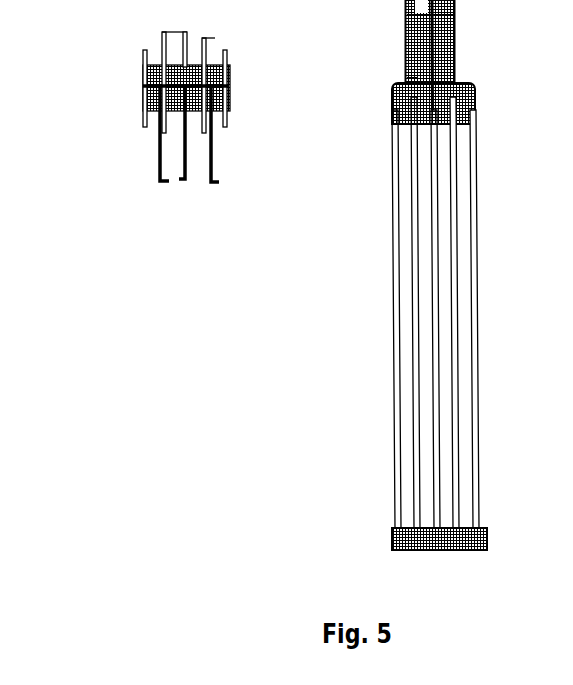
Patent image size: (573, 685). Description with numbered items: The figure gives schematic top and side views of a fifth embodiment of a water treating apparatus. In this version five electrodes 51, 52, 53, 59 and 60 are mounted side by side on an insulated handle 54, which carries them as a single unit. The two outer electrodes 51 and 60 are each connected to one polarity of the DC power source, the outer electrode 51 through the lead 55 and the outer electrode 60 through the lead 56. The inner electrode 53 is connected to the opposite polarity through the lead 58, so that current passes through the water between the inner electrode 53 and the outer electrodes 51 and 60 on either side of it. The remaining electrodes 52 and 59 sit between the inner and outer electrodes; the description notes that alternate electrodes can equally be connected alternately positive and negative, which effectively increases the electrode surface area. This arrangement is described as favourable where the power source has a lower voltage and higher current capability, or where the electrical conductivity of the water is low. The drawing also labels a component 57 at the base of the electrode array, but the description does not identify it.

The outer electrode 51 is at (143, 70).
The electrode 52 is at (162, 42).
The inner electrode 53 is at (167, 32).
The insulated handle 54 is at (205, 77).
The lead 55 is at (155, 150).
The lead 56 is at (216, 174).
The base plate 57 is at (143, 87).
The lead 58 is at (231, 107).
The electrode 59 is at (216, 38).
The outer electrode 60 is at (185, 177).